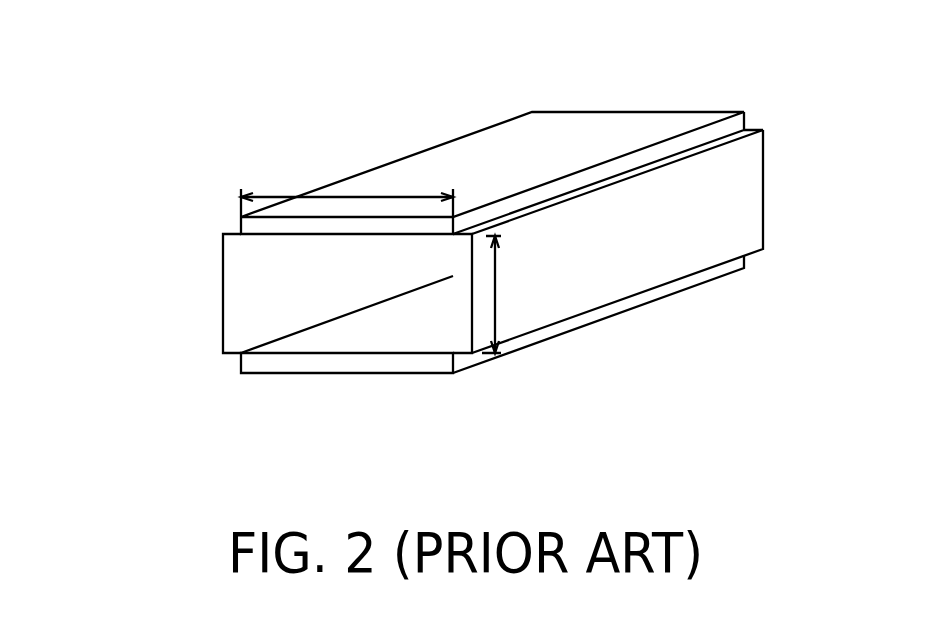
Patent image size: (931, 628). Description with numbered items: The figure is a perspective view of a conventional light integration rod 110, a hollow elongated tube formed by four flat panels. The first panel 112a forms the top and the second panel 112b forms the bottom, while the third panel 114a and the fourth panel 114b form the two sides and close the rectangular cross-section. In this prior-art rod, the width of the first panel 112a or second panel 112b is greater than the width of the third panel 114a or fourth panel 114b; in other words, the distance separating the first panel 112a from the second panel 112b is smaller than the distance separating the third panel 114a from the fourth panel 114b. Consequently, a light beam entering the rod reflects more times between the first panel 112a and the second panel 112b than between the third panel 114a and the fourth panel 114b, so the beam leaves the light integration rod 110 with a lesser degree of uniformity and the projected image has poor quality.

The light integration rod 110 is at (440, 259).
The first panel 112a is at (593, 135).
The second panel 112b is at (585, 317).
The third panel 114a is at (230, 289).
The fourth panel 114b is at (648, 272).